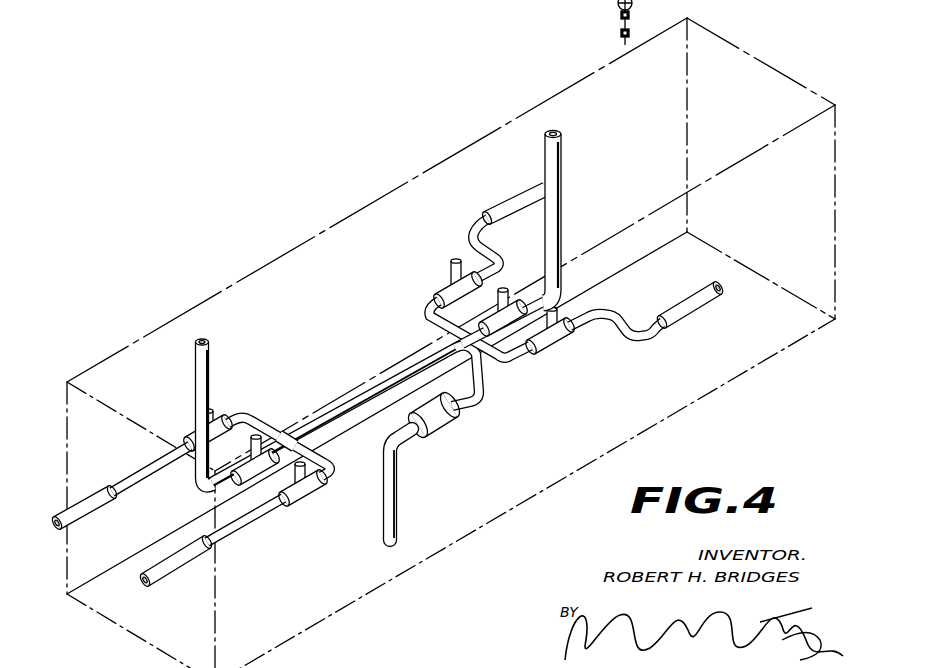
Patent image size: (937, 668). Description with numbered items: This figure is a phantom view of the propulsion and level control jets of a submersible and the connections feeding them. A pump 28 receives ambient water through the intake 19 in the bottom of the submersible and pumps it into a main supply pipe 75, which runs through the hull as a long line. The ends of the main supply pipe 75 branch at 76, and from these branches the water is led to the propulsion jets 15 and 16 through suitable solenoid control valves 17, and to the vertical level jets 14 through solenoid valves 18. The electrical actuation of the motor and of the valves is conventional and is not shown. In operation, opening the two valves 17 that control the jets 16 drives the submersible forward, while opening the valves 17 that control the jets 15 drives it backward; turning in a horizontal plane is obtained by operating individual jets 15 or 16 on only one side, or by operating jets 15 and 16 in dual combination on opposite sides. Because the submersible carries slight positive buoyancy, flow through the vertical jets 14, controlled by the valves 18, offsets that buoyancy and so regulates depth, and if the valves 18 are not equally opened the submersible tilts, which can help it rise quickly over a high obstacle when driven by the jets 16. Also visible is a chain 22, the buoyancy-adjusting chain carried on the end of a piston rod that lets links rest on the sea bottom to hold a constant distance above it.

The vertical level jet 14 is at (212, 343).
The propulsion jet 15 is at (522, 197).
The propulsion jet 16 is at (68, 512).
The solenoid control valve 17 is at (214, 409).
The solenoid valve 18 is at (258, 434).
The intake 19 is at (383, 518).
The chain 22 is at (620, 18).
The pump 28 is at (452, 430).
The main supply pipe 75 is at (379, 383).
The branch 76 is at (283, 432).